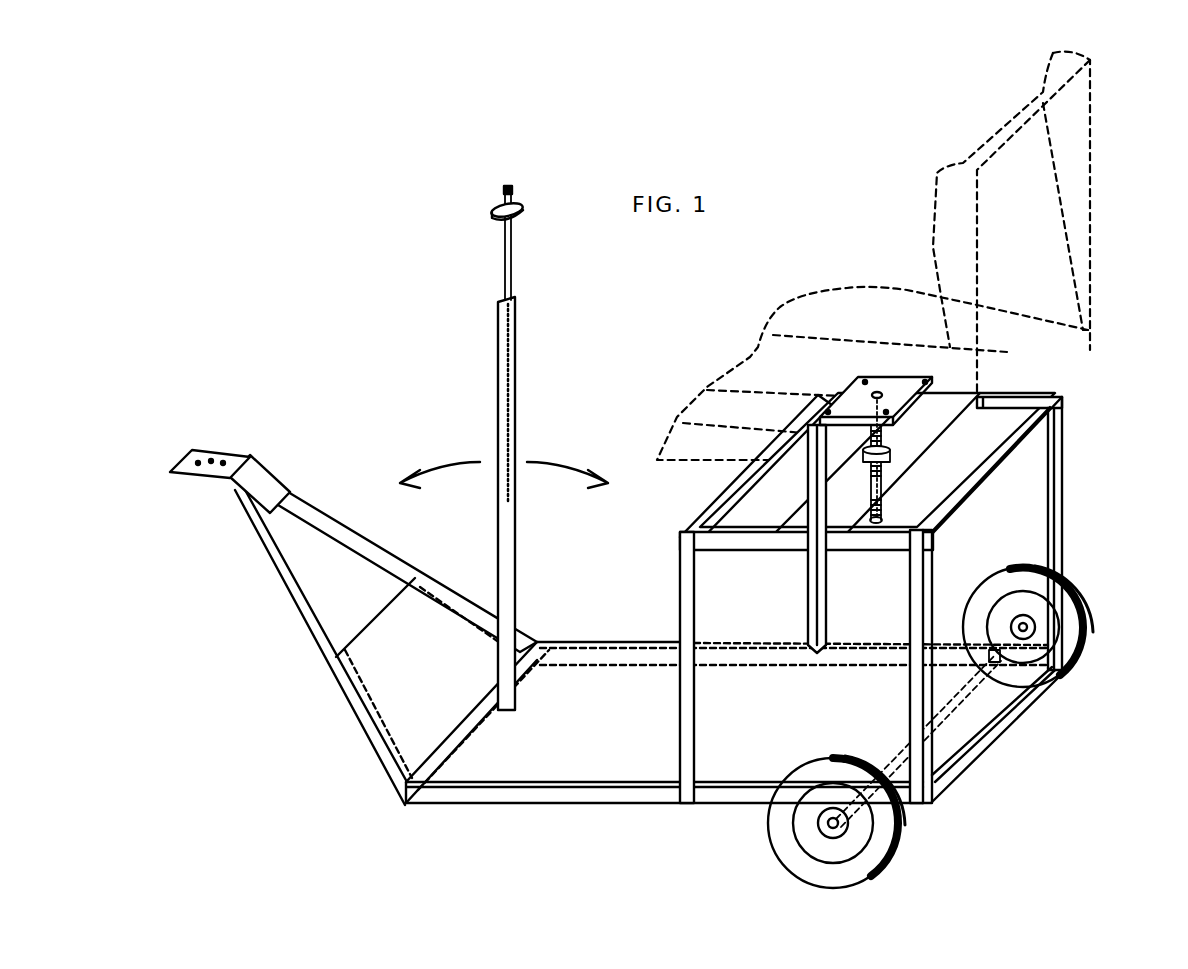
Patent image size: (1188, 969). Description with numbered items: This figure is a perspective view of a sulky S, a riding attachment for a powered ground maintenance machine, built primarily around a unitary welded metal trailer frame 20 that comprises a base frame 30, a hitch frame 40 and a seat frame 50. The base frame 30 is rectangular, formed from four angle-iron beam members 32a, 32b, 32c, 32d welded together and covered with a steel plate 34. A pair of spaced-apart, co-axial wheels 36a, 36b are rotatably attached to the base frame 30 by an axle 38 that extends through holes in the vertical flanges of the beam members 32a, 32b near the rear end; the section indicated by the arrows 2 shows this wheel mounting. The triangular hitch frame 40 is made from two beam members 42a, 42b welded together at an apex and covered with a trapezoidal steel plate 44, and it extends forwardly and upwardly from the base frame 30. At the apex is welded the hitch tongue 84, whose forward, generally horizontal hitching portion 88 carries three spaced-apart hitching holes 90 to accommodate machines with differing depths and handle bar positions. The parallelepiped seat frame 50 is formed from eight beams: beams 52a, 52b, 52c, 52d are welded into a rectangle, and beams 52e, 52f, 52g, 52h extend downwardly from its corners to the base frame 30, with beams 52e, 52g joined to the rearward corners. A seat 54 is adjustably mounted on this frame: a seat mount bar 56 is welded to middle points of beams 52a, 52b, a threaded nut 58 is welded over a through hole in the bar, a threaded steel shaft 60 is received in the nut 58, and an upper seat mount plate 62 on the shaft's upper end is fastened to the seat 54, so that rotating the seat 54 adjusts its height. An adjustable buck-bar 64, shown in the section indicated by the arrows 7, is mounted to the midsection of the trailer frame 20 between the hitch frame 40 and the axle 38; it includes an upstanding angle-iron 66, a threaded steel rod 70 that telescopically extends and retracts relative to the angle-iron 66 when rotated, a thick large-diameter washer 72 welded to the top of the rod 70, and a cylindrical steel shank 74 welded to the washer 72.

The sulky S is at (836, 94).
The trailer frame 20 is at (678, 324).
The base frame 30 is at (749, 747).
The beam member 32a is at (655, 795).
The beam member 32b is at (592, 653).
The beam member 32c is at (432, 768).
The beam member 32d is at (1010, 707).
The steel plate 34 is at (628, 757).
The wheel 36a is at (873, 863).
The wheel 36b is at (1080, 612).
The axle 38 is at (950, 705).
The hitch frame 40 is at (343, 608).
The beam member 42a is at (322, 648).
The beam member 42b is at (365, 545).
The trapezoidal steel plate 44 is at (400, 690).
The seat frame 50 is at (909, 524).
The beam 52a is at (733, 550).
The beam 52b is at (1065, 400).
The beam 52c is at (728, 493).
The beam 52d is at (973, 490).
The beam 52e is at (915, 565).
The beam 52f is at (696, 628).
The beam 52g is at (1063, 465).
The beam 52h is at (826, 608).
The seat 54 is at (832, 305).
The seat mount bar 56 is at (853, 487).
The threaded nut 58 is at (885, 452).
The threaded steel shaft 60 is at (880, 507).
The upper seat mount plate 62 is at (903, 374).
The adjustable buck-bar 64 is at (569, 399).
The angle-iron 66 is at (515, 548).
The threaded steel rod 70 is at (512, 265).
The washer 72 is at (497, 215).
The cylindrical steel shank 74 is at (505, 190).
The hitch tongue 84 is at (270, 483).
The hitching portion 88 is at (222, 452).
The hitching holes 90 is at (185, 472).
The section line 2- 2 is at (743, 772).
The section line 7- 7 is at (565, 707).